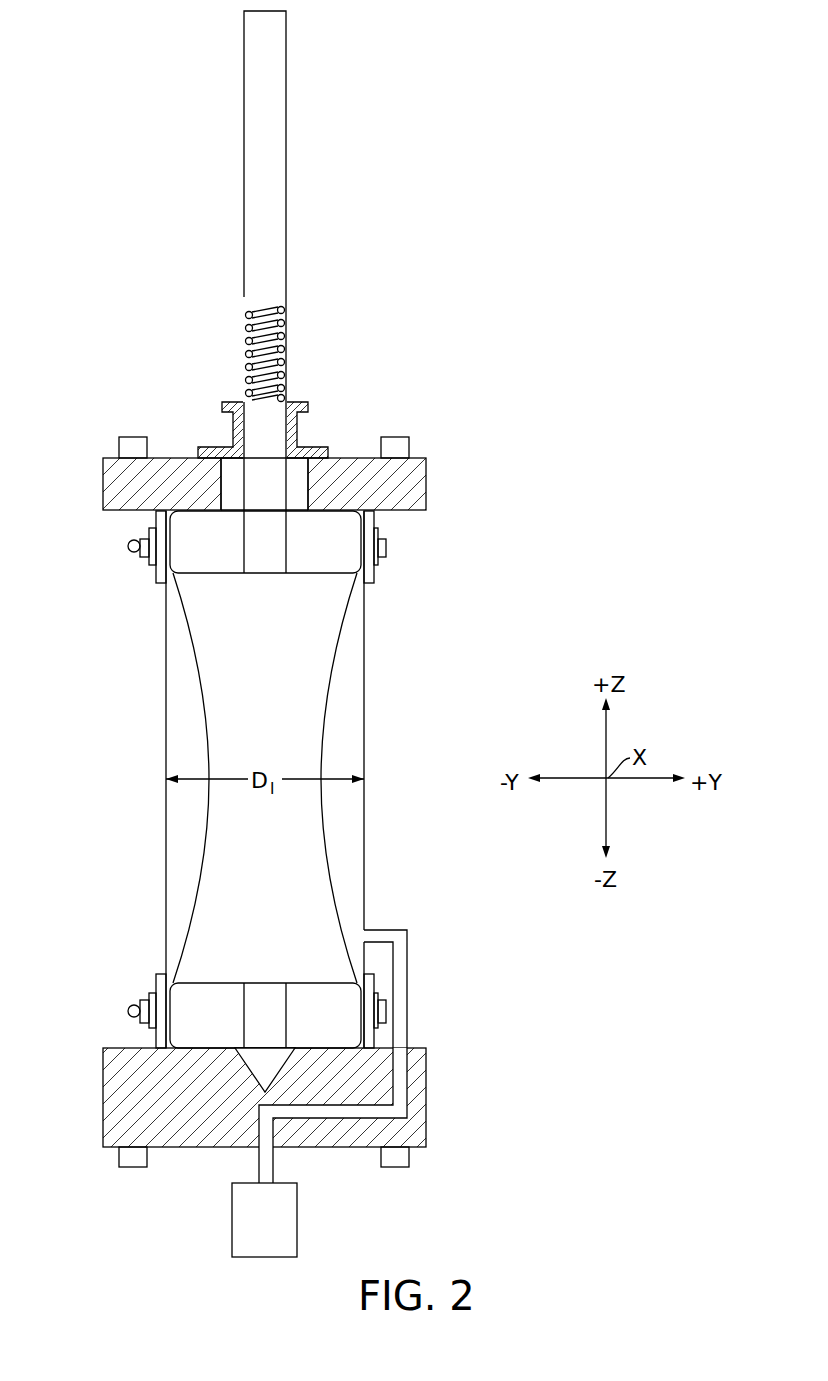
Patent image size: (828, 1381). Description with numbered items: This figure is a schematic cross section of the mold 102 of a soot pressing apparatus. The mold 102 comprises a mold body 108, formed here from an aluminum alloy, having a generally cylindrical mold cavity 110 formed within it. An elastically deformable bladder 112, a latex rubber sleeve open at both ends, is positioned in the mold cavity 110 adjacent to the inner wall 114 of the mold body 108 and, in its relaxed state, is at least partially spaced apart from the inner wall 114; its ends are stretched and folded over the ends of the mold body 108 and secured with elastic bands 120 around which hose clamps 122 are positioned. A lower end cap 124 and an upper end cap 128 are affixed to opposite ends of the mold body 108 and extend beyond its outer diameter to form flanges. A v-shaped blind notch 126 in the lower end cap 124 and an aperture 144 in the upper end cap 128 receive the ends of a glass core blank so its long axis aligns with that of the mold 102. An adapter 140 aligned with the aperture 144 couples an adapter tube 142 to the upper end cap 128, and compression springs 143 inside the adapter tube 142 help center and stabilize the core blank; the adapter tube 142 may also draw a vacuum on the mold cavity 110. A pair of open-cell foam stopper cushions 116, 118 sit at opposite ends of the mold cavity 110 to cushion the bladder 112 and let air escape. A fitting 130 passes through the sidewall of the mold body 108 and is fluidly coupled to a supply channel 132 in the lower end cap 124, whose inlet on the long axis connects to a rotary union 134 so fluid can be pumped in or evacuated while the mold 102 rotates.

The mold 102 is at (359, 634).
The mold body 108 is at (366, 733).
The mold cavity 110 is at (178, 724).
The elastically deformable bladder 112 is at (338, 648).
The inner wall 114 is at (170, 686).
The stopper cushion 116 is at (227, 557).
The stopper cushion 118 is at (227, 1027).
The elastic band 120 is at (386, 544).
The hose clamp 122 is at (128, 545).
The lower end cap 124 is at (427, 1096).
The blind notch 126 is at (244, 1066).
The upper end cap 128 is at (426, 484).
The fitting 130 is at (409, 955).
The supply channel 132 is at (308, 1106).
The rotary union 134 is at (297, 1222).
The adapter 140 is at (308, 406).
The adapter tube 142 is at (286, 210).
The compression spring 143 is at (257, 313).
The aperture 144 is at (275, 478).